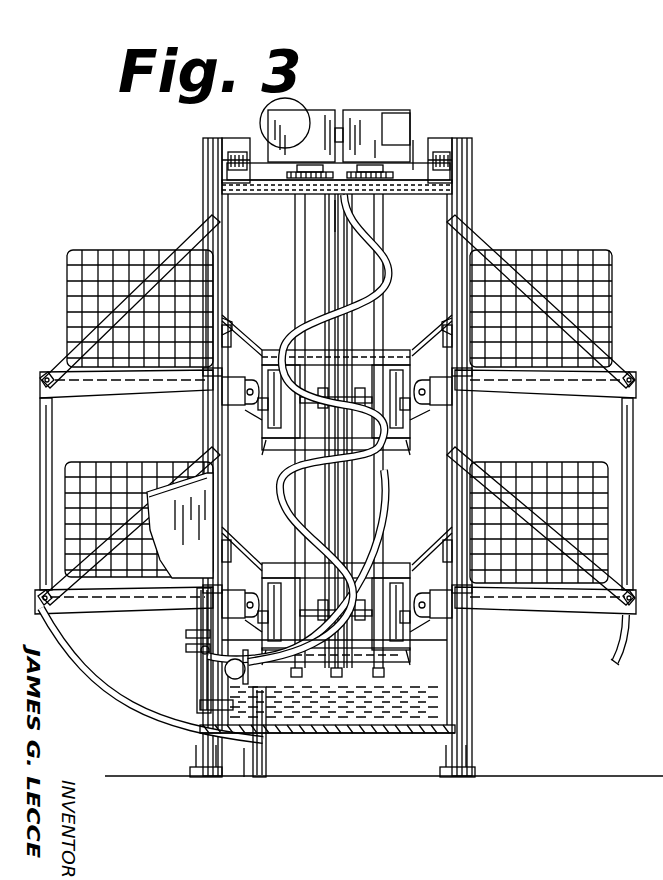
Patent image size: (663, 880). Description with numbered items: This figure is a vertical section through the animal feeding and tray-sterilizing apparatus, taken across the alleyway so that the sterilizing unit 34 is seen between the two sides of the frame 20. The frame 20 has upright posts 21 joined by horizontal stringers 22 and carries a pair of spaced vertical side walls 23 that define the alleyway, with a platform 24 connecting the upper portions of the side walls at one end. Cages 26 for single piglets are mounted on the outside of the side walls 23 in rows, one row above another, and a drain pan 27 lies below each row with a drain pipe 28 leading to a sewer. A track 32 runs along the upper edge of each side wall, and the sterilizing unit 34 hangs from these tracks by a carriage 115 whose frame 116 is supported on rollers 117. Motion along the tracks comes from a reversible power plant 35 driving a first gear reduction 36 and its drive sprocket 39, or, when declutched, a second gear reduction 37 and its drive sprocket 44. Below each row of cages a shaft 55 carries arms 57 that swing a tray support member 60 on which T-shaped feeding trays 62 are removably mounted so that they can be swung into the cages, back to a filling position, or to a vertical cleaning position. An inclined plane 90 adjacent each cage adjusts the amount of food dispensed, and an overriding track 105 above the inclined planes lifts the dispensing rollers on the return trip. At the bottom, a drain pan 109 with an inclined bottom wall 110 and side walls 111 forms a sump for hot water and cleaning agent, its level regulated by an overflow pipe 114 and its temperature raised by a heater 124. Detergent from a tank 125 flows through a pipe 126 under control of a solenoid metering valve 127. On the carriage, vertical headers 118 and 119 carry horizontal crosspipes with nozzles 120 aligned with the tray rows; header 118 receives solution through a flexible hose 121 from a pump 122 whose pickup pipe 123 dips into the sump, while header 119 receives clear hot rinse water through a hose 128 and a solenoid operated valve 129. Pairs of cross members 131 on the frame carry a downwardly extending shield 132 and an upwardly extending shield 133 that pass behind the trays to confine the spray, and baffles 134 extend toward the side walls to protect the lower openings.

The frame 20 is at (492, 150).
The upright posts 21 is at (472, 660).
The stringers 22 is at (213, 386).
The side walls 23 is at (205, 211).
The platform 24 is at (413, 150).
The cages 26 is at (95, 250).
The drain pan 27 is at (58, 378).
The drain pipe 28 is at (52, 437).
The track 32 is at (237, 126).
The sterilizing unit 34 is at (388, 338).
The reversible power plant 35 is at (292, 133).
The first gear reduction 36 is at (329, 112).
The second gear reduction 37 is at (375, 103).
The drive sprocket 39 is at (322, 156).
The drive sprocket 44 is at (384, 170).
The shaft 55 is at (250, 384).
The arms 57 is at (260, 409).
The tray support member 60 is at (336, 410).
The feeding trays 62 is at (276, 372).
The inclined plane 90 is at (442, 360).
The overriding track 105 is at (228, 332).
The drain pan 109 is at (380, 737).
The bottom wall 110 is at (288, 736).
The side walls 111 is at (449, 705).
The overflow pipe 114 is at (250, 748).
The carriage 115 is at (460, 186).
The frame 116 is at (418, 192).
The rollers 117 is at (225, 162).
The header 118 is at (354, 473).
The header 119 is at (320, 246).
The nozzles 120 is at (318, 588).
The flexible hose 121 is at (335, 232).
The pump 122 is at (228, 672).
The pickup pipe 123 is at (205, 704).
The heater 124 is at (432, 740).
The tank 125 is at (166, 492).
The pipe 126 is at (198, 610).
The metering valve 127 is at (186, 634).
The hose 128 is at (335, 223).
The solenoid operated valve 129 is at (186, 649).
The cross members 131 is at (272, 452).
The shield 132 is at (415, 366).
The shield 133 is at (268, 440).
The baffles 134 is at (264, 535).